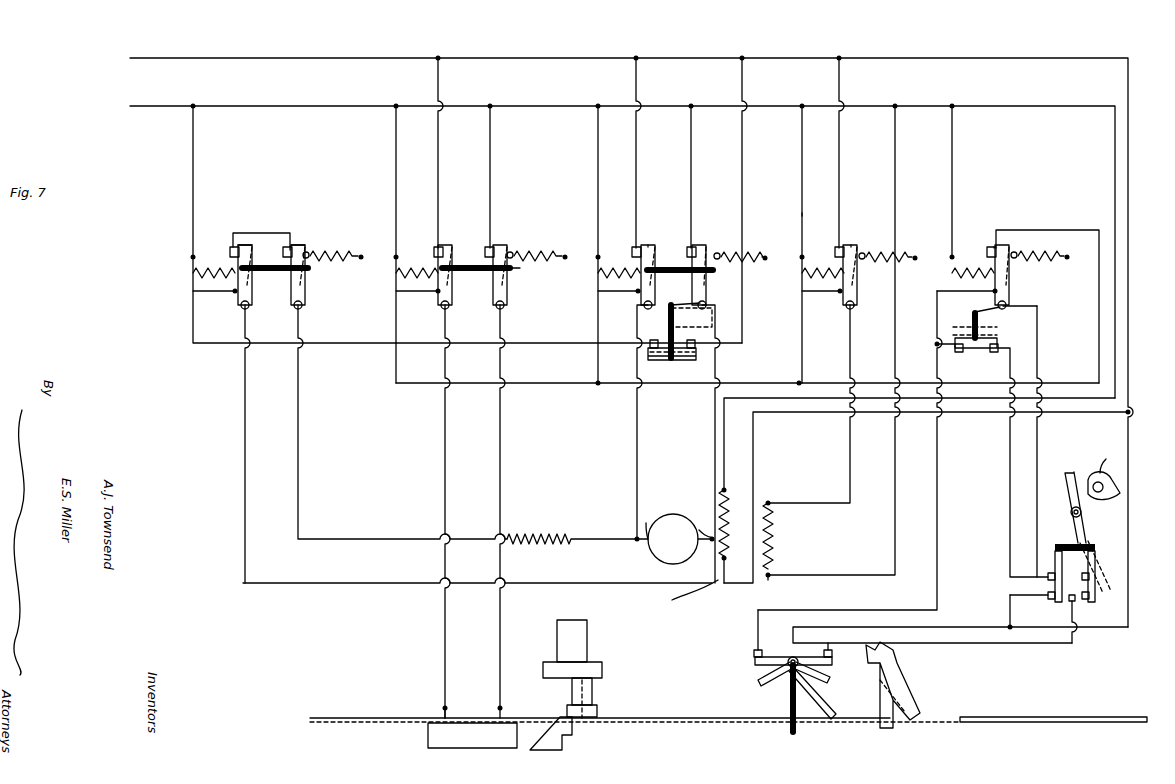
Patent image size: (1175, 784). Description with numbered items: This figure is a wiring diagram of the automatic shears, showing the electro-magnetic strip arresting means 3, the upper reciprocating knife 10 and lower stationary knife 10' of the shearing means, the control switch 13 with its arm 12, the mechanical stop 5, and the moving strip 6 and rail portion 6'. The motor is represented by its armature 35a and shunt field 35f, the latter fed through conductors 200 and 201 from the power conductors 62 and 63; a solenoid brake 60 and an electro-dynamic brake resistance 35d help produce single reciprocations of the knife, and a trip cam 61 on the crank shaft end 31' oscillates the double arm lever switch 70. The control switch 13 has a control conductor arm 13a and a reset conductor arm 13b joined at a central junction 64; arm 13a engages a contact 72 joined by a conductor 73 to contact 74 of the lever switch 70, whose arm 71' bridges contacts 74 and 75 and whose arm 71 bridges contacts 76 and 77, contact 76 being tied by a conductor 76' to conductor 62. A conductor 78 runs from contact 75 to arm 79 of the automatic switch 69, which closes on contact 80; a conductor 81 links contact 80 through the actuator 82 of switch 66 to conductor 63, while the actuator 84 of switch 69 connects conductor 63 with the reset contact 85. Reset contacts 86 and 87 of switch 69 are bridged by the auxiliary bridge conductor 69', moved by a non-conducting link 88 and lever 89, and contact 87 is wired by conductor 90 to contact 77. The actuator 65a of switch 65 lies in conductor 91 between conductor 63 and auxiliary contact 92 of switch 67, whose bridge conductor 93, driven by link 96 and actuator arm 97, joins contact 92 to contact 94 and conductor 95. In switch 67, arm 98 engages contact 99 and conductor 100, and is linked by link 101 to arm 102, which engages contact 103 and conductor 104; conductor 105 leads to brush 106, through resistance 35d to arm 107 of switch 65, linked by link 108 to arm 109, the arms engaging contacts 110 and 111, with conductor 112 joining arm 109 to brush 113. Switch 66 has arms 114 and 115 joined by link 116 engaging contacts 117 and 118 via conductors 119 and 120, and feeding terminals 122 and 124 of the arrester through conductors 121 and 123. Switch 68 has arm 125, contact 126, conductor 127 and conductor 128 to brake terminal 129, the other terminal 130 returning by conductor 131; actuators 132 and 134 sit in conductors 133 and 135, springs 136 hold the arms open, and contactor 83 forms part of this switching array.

The electro-magnetic strip arresting means 3 is at (428, 743).
The mechanical stop 5 is at (892, 661).
The moving strip 6 is at (635, 735).
The rail section 6' is at (1053, 709).
The upper reciprocating knife 10 is at (571, 669).
The lower stationary knife 10' is at (569, 735).
The switch arm 12 is at (798, 710).
The control switch 13 is at (786, 707).
The control conductor arm 13a is at (820, 668).
The reset conductor arm 13b is at (758, 667).
The end of the crank shaft 31' is at (1104, 459).
The armature of the motor 35a is at (676, 510).
The electro-dynamic brake resistance 35d is at (548, 544).
The field of the motor 35f is at (700, 528).
The electro-magnetic actuated brake 60 is at (778, 511).
The trip cam 61 is at (1112, 492).
The power conductor 62 is at (150, 58).
The power conductor 63 is at (150, 106).
The central junction 64 is at (796, 658).
The automatic switch 65 is at (318, 290).
The electro-magnetic actuating means 65a is at (193, 257).
The automatic switch 66 is at (516, 296).
The automatic switch 67 is at (709, 288).
The single contact electro-magnetic switch 68 is at (854, 306).
The single contact automatic switch 69 is at (1026, 277).
The auxiliary bridge switch conductor 69' is at (976, 356).
The oscillating double arm lever switch 70 is at (1074, 522).
The switch arm 71 is at (1056, 573).
The switch arm 71' is at (1115, 571).
The contact 72 is at (832, 640).
The conductor 73 is at (967, 643).
The contact 74 is at (1076, 604).
The contact 75 is at (1088, 576).
The contact 76 is at (1031, 609).
The conductor 76' is at (992, 612).
The contact 77 is at (1048, 578).
The conductor 78 is at (1037, 426).
The oscillating conductor arm 79 is at (981, 248).
The contact 80 is at (992, 247).
The conductor 81 is at (1060, 230).
The electro-magnetic actuator 82 is at (398, 255).
The contactor 83 is at (329, 178).
The electro-magnetic actuator 84 is at (952, 273).
The reset contact 85 is at (756, 649).
The reset contact 86 is at (942, 346).
The reset contact 87 is at (1000, 334).
The non-conducting link 88 is at (972, 314).
The oscillating actuating lever 89 is at (1023, 306).
The conductor 90 is at (1009, 448).
The conductor 91 is at (193, 343).
The auxiliary contact 92 is at (655, 344).
The bridge conductor 93 is at (650, 359).
The auxiliary contact 94 is at (688, 345).
The conductor 95 is at (748, 152).
The link 96 is at (660, 309).
The actuator arm 97 is at (714, 312).
The oscillating conductor arm 98 is at (742, 279).
The contact 99 is at (695, 247).
The conductor 100 is at (691, 151).
The non-conductor link 101 is at (682, 255).
The oscillating conductor arm 102 is at (645, 246).
The contact 103 is at (634, 248).
The conductor 104 is at (636, 159).
The conductor 105 is at (637, 438).
The armature brush 106 is at (648, 524).
The oscillating conductor arm 107 is at (294, 247).
The non-conductor link 108 is at (258, 284).
The oscillating conductor arm 109 is at (232, 248).
The contact 110 is at (272, 233).
The contact 111 is at (242, 247).
The conductor 112 is at (310, 583).
The armature brush 113 is at (690, 555).
The oscillating arm 114 is at (514, 275).
The oscillating arm 115 is at (454, 302).
The non-conducting link 116 is at (481, 258).
The contact 117 is at (497, 245).
The contact 118 is at (439, 245).
The conductor 119 is at (490, 148).
The conductor 120 is at (438, 151).
The conductor 121 is at (509, 433).
The terminal 122 is at (500, 708).
The conductor 123 is at (445, 458).
The terminal 124 is at (445, 708).
The oscillating conductor arm 125 is at (851, 249).
The contact 126 is at (838, 246).
The conductor 127 is at (839, 151).
The conductor 128 is at (850, 445).
The terminal 129 is at (768, 503).
The terminal 130 is at (772, 578).
The conductor 131 is at (895, 532).
The electro-magnetic actuator 132 is at (607, 276).
The conductor 133 is at (598, 221).
The electro-magnetic actuator 134 is at (806, 287).
The conductor 135 is at (804, 218).
The spring 136 is at (350, 256).
The conductor 200 is at (812, 413).
The conductor 201 is at (804, 398).